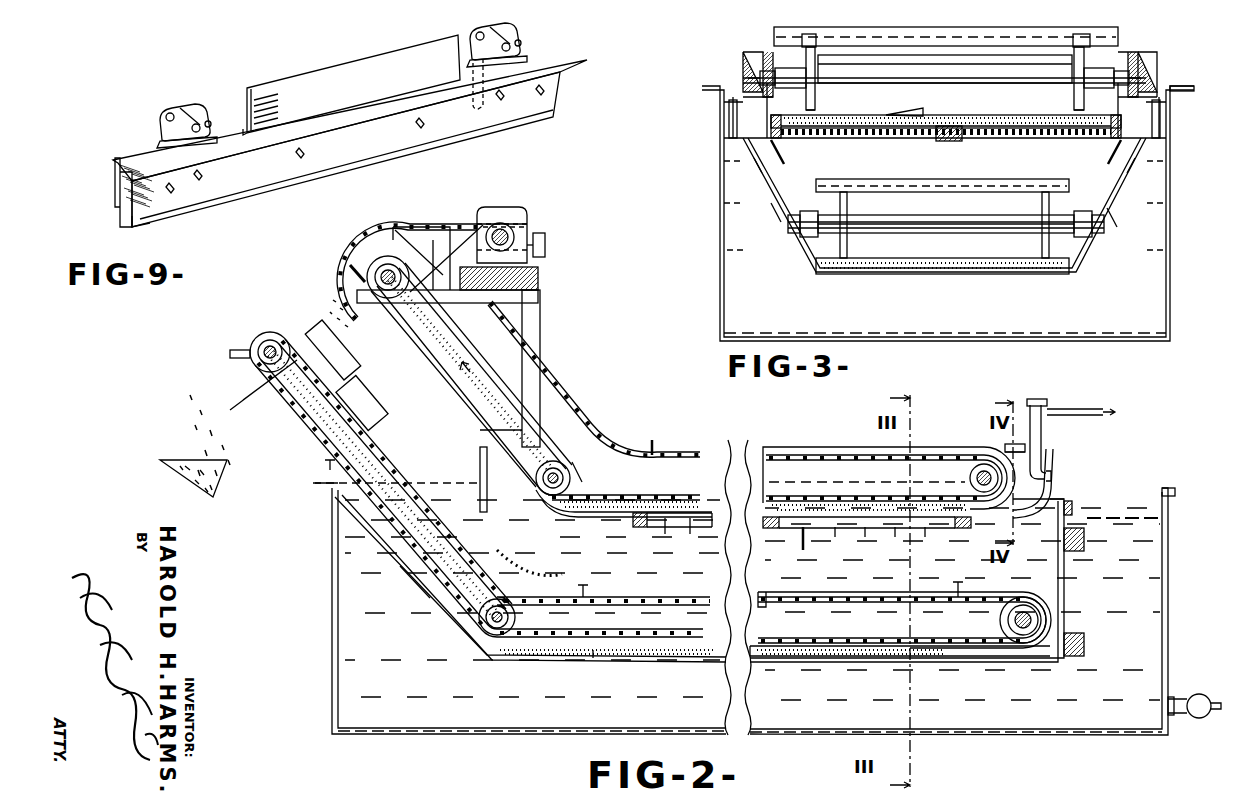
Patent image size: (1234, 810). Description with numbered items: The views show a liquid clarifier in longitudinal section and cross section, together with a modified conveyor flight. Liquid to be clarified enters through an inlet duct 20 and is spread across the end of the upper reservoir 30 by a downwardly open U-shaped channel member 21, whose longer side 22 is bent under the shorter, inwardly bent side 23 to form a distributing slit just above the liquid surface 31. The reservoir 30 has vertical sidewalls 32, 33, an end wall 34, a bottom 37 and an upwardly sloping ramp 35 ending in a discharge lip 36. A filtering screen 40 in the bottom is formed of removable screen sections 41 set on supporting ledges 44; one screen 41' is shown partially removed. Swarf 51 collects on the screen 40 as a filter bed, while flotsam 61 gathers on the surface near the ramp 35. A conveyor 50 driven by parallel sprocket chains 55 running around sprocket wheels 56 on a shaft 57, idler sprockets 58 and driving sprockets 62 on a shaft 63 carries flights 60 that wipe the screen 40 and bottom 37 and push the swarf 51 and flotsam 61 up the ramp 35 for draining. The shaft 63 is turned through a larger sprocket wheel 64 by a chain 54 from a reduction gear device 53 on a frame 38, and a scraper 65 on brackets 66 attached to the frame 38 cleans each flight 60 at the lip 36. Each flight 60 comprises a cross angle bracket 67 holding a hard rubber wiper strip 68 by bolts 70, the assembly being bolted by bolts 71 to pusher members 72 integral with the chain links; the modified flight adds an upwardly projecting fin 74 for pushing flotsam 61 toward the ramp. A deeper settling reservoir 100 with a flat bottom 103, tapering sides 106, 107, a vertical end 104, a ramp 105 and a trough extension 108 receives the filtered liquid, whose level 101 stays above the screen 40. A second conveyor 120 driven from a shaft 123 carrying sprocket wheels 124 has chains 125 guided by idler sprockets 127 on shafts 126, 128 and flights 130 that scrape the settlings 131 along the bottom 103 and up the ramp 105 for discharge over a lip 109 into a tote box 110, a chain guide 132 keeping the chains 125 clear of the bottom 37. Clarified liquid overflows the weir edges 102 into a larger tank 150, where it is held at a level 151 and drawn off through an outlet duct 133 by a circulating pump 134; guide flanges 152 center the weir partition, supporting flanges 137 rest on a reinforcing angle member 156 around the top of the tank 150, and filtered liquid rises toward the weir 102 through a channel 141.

In FIG. 2, the inlet pipe or duct 20 is at (1078, 407).
In FIG. 2, the U-shaped channel member 21 is at (1037, 399).
In FIG. 2, the longer side of channel member 22 is at (1033, 472).
In FIG. 2, the shorter side of channel member 23 is at (1019, 447).
In FIG. 2, the first or upper reservoir 30 is at (1063, 468).
In FIG. 3, the liquid surface 31 is at (889, 87).
In FIG. 2, the liquid surface 31 is at (845, 482).
In FIG. 3, the vertical sidewall 32 is at (1180, 77).
In FIG. 3, the vertical sidewall 33 is at (760, 92).
In FIG. 2, the vertical sidewall 33 is at (837, 448).
In FIG. 2, the end wall 34 is at (1057, 452).
In FIG. 2, the inclined trough or ramp 35 is at (442, 393).
In FIG. 2, the discharge lip 36 is at (340, 318).
In FIG. 2, the bottom of upper tank 37 is at (567, 517).
In FIG. 2, the frame 38 is at (546, 338).
In FIG. 3, the filtering screen 40 is at (820, 141).
In FIG. 2, the filtering screen 40 is at (657, 528).
In FIG. 3, the screen section 41 is at (946, 147).
In FIG. 3, the partially removed screen section 41' is at (906, 141).
In FIG. 3, the supporting frame ledges 44 is at (948, 142).
In FIG. 3, the conveyor 50 is at (1008, 15).
In FIG. 2, the conveyor 50 is at (472, 320).
In FIG. 3, the swarf 51 is at (1062, 137).
In FIG. 2, the swarf 51 is at (340, 298).
In FIG. 2, the reduction gear device 53 is at (528, 214).
In FIG. 2, the belt or sprocket chain 54 is at (446, 221).
In FIG. 3, the sprocket chains 55 is at (811, 36).
In FIG. 2, the sprocket chains 55 is at (557, 400).
In FIG. 3, the sprocket wheels 56 is at (815, 65).
In FIG. 2, the sprocket wheels 56 is at (970, 475).
In FIG. 3, the shaft 57 is at (864, 78).
In FIG. 2, the idler sprockets 58 is at (573, 463).
In FIG. 9, the conveyor flights 60 is at (570, 83).
In FIG. 3, the conveyor flights 60 is at (1127, 37).
In FIG. 2, the conveyor flights 60 is at (654, 442).
In FIG. 2, the flotsam 61 is at (589, 487).
In FIG. 2, the driving sprockets 62 is at (396, 292).
In FIG. 2, the drive shaft 63 is at (393, 271).
In FIG. 2, the driving sprocket wheel 64 is at (346, 252).
In FIG. 2, the scraper 65 is at (348, 275).
In FIG. 2, the brackets 66 is at (448, 258).
In FIG. 9, the cross angle bracket 67 is at (115, 183).
In FIG. 9, the hard rubber wiper strip 68 is at (135, 226).
In FIG. 9, the bolts 70 is at (173, 192).
In FIG. 9, the bolts 71 is at (204, 175).
In FIG. 9, the pusher members 72 is at (158, 144).
In FIG. 9, the upwardly projecting plate or fin 74 is at (367, 56).
In FIG. 3, the second or settling reservoir 100 is at (1130, 197).
In FIG. 2, the second or settling reservoir 100 is at (1069, 613).
In FIG. 3, the liquid level 101 is at (743, 97).
In FIG. 2, the liquid level 101 is at (482, 480).
In FIG. 3, the weir edges 102 is at (735, 104).
In FIG. 2, the weir edges 102 is at (1073, 504).
In FIG. 3, the flat bottom 103 is at (957, 274).
In FIG. 2, the flat bottom 103 is at (827, 658).
In FIG. 2, the vertical end 104 is at (1068, 580).
In FIG. 2, the sloping ramp 105 is at (428, 603).
In FIG. 3, the tapering side 106 is at (775, 215).
In FIG. 3, the tapering side 107 is at (1108, 223).
In FIG. 2, the trough extension 108 is at (288, 432).
In FIG. 2, the lip 109 is at (220, 414).
In FIG. 2, the tote box 110 is at (224, 477).
In FIG. 3, the second conveyor 120 is at (1078, 197).
In FIG. 2, the second conveyor 120 is at (415, 424).
In FIG. 2, the driving shaft 123 is at (279, 333).
In FIG. 2, the sprocket wheels 124 is at (253, 340).
In FIG. 2, the sprocket chains 125 is at (839, 597).
In FIG. 3, the shaft 126 is at (941, 209).
In FIG. 2, the shaft 126 is at (1013, 617).
In FIG. 3, the idler sprockets 127 is at (1060, 213).
In FIG. 2, the idler sprockets 127 is at (497, 597).
In FIG. 2, the shaft with idler sprockets 128 is at (515, 619).
In FIG. 3, the flights 130 is at (877, 197).
In FIG. 2, the flights 130 is at (230, 354).
In FIG. 3, the settlings 131 is at (1001, 260).
In FIG. 2, the settlings 131 is at (405, 567).
In FIG. 2, the chain guide or bracket 132 is at (488, 540).
In FIG. 3, the outlet duct 133 is at (780, 161).
In FIG. 2, the outlet duct 133 is at (1185, 699).
In FIG. 2, the circulating pump 134 is at (1192, 719).
In FIG. 3, the supporting flanges 137 is at (748, 62).
In FIG. 3, the channel 141 is at (758, 167).
In FIG. 3, the third reservoir or tank 150 is at (1176, 249).
In FIG. 2, the third reservoir or tank 150 is at (327, 585).
In FIG. 3, the liquid level 151 is at (724, 136).
In FIG. 2, the liquid level 151 is at (1163, 519).
In FIG. 3, the guide flanges 152 is at (731, 121).
In FIG. 3, the reinforcing angle member 156 is at (1172, 88).
In FIG. 2, the reinforcing angle member 156 is at (1175, 493).